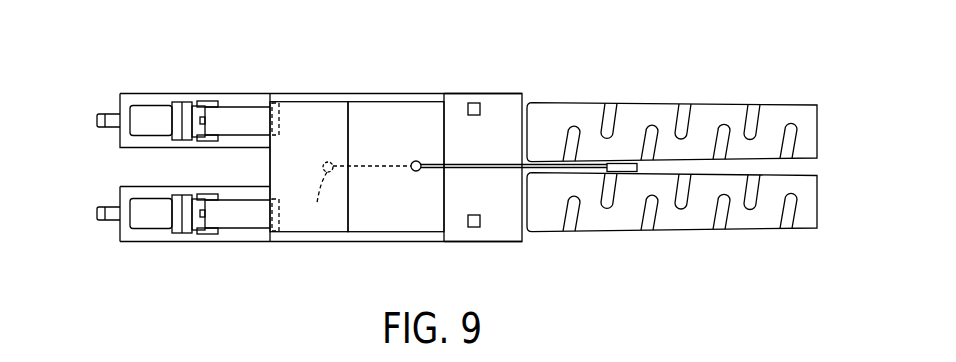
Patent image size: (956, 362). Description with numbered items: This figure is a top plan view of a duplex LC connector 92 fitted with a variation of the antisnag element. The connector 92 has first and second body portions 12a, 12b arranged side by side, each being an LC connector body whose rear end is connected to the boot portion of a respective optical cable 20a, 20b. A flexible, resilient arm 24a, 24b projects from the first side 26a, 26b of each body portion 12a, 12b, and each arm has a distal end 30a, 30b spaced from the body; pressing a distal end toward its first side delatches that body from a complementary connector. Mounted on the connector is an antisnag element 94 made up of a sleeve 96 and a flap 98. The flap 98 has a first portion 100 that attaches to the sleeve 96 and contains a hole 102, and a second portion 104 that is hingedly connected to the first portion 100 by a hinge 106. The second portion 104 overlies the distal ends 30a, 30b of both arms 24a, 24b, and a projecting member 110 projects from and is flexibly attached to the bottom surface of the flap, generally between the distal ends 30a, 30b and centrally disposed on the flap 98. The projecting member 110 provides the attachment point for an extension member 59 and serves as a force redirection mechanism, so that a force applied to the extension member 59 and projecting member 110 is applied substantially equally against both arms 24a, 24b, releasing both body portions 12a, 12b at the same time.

The duplex LC connector 92 is at (375, 60).
The first body portion 12a is at (120, 237).
The second body portion 12b is at (122, 97).
The arm 24a is at (242, 216).
The arm 24b is at (243, 115).
The first side 26a is at (158, 242).
The first side 26b is at (158, 93).
The distal end 30a is at (275, 235).
The distal end 30b is at (275, 104).
The second portion 104 is at (300, 118).
The flap 98 is at (396, 97).
The first portion 100 is at (424, 97).
The antisnag element 94 is at (447, 105).
The sleeve 96 is at (495, 222).
The extension member 59 is at (494, 162).
The hole 102 is at (413, 172).
The hinge 106 is at (350, 178).
The projecting member 110 is at (320, 195).
The optical cable 20a is at (680, 232).
The optical cable 20b is at (710, 112).